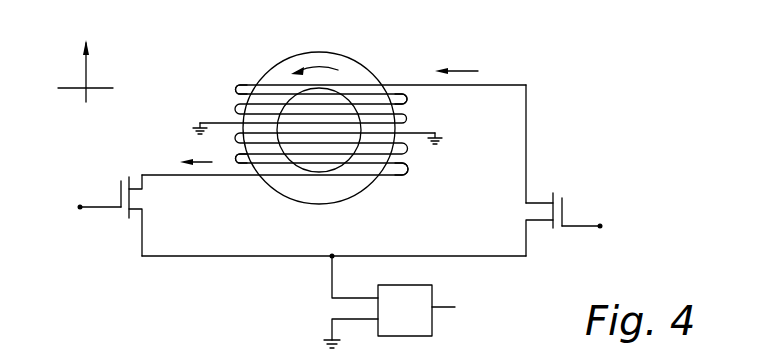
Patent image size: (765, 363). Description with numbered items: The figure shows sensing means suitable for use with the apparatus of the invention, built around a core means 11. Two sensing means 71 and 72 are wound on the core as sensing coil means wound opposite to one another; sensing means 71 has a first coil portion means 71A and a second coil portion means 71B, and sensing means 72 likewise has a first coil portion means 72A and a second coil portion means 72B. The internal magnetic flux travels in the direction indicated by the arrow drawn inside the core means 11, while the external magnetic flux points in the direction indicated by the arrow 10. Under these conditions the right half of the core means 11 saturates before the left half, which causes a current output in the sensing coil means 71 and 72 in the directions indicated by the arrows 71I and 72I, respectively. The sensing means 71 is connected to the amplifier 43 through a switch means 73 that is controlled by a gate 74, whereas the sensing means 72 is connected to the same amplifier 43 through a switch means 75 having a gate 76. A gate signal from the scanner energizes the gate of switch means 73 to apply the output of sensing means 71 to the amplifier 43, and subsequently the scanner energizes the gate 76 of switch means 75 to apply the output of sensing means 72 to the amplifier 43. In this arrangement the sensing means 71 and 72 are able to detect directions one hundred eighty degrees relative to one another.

The arrow 10 is at (83, 70).
The core means 11 is at (283, 62).
The sensing means 71 is at (358, 110).
The first coil portion means 71A is at (400, 97).
The second coil portion means 71B is at (242, 90).
The arrow 71I is at (465, 71).
The sensing means 72 is at (275, 175).
The first coil portion means 72A is at (245, 157).
The second coil portion means 72B is at (405, 160).
The arrow 72I is at (198, 160).
The switch means 73 is at (553, 210).
The gate 74 is at (600, 226).
The switch means 75 is at (133, 200).
The gate 76 is at (80, 205).
The amplifier 43 is at (413, 285).